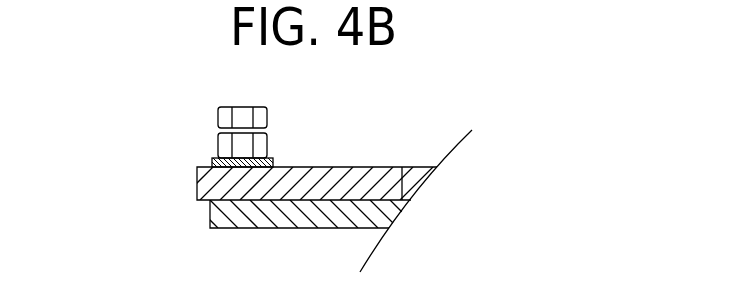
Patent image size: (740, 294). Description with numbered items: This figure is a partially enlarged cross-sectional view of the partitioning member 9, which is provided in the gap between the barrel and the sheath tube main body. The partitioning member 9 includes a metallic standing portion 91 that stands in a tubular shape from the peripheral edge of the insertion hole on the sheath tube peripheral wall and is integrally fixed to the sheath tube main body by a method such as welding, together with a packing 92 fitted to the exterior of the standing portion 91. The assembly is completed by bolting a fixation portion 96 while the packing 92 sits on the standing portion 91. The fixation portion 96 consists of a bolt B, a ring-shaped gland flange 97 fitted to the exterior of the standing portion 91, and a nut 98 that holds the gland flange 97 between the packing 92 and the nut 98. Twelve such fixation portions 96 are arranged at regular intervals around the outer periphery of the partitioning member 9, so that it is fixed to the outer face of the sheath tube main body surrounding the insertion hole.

The partitioning member 9 is at (403, 168).
The standing portion 91 is at (395, 218).
The packing 92 is at (413, 183).
The fixation portion 96 is at (99, 73).
The gland flange 97 is at (214, 162).
The nut 98 is at (218, 146).
The bolt B is at (218, 117).